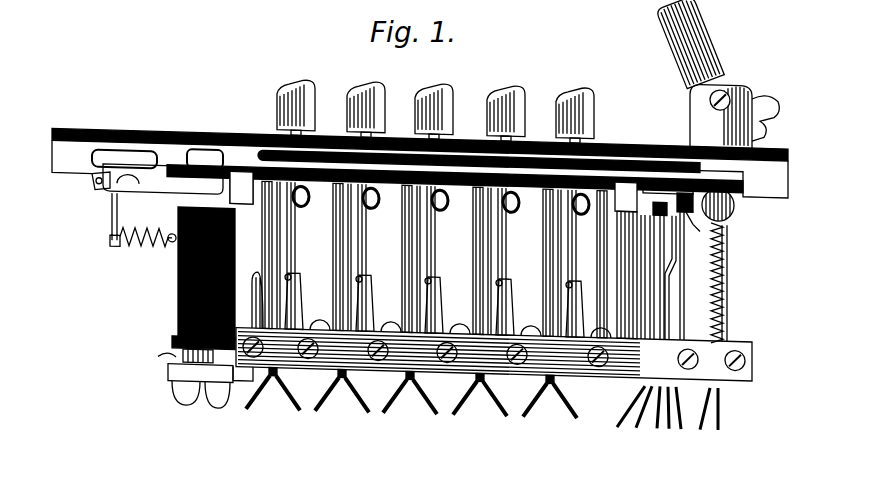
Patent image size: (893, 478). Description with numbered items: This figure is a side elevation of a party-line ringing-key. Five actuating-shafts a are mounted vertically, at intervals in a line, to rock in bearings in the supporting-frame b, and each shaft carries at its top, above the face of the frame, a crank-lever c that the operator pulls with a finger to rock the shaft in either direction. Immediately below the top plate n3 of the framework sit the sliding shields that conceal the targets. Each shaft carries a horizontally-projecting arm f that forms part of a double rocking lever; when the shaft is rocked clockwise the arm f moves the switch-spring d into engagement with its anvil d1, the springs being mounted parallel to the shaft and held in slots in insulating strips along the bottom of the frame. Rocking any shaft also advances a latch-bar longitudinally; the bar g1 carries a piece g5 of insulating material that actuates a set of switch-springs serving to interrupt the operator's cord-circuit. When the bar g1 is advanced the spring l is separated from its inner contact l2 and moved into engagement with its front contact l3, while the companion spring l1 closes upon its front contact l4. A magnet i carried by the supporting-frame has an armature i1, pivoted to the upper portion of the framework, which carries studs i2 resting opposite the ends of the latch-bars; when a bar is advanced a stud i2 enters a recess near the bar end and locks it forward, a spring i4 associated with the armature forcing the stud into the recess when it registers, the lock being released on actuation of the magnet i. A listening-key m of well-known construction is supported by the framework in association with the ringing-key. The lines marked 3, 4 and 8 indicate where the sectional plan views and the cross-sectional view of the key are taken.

The top plate n3 is at (106, 133).
The supporting-frame b is at (172, 143).
The crank-lever c is at (367, 80).
The actuating-shaft a is at (342, 206).
The switch-spring d is at (305, 181).
The anvil d1 is at (427, 188).
The horizontally-projecting arm f is at (368, 202).
The spring l is at (645, 261).
The spring l1 is at (680, 253).
The inner contact l2 is at (660, 232).
The front contact l3 is at (653, 219).
The front contact l4 is at (675, 219).
The latch-bar g1 is at (665, 172).
The piece of insulating material g5 is at (717, 217).
The listening-key m is at (748, 71).
The magnet i is at (177, 283).
The armature i1 is at (145, 186).
The stud i2 is at (163, 171).
The spring i4 is at (147, 236).
The section line 3 3 is at (52, 136).
The section line 4 4 is at (52, 172).
The section line 8 8 is at (322, 413).